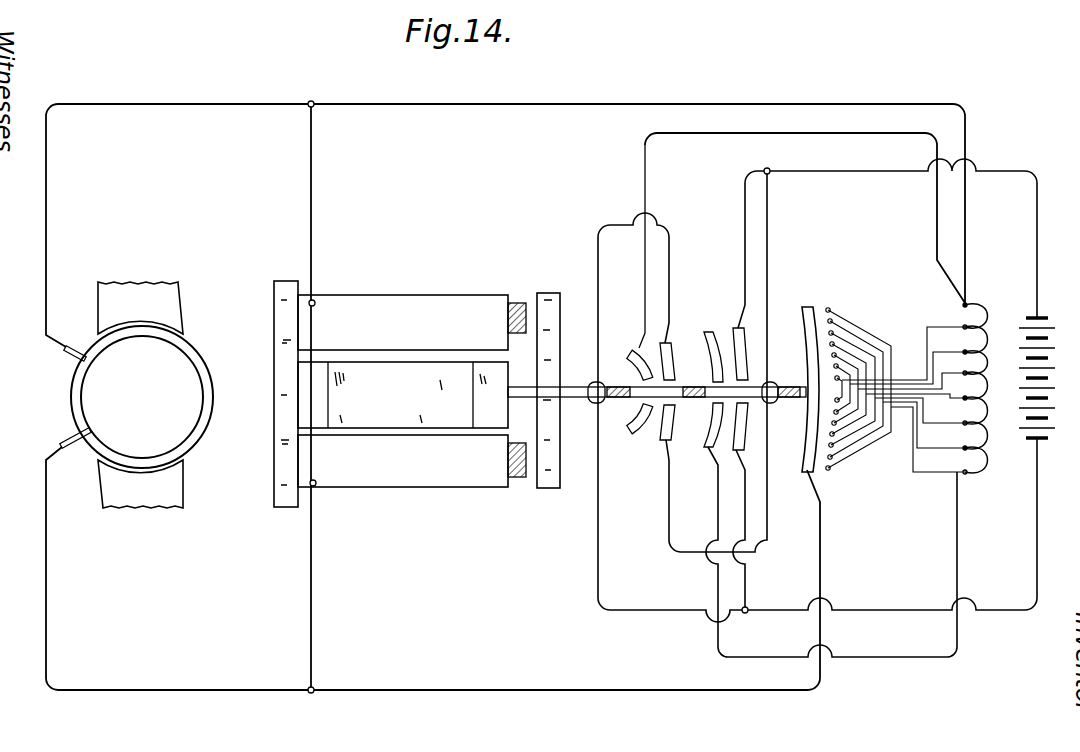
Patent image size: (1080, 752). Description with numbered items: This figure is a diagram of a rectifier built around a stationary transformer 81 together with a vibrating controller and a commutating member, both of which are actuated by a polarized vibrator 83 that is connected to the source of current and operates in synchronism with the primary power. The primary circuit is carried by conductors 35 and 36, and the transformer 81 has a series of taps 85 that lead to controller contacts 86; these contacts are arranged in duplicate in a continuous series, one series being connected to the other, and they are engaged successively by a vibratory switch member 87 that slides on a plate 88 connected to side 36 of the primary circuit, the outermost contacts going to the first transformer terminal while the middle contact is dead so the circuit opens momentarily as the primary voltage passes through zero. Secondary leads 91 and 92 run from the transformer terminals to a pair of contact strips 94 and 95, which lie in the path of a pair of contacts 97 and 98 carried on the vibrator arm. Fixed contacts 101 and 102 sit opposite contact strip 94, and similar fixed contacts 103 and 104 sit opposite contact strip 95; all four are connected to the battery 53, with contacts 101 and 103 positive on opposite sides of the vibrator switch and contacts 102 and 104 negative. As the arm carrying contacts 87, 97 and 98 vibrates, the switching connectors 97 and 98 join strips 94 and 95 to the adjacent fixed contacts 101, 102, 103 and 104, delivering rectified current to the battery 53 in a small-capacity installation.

The primary circuit side 35 is at (47, 215).
The side of the primary circuit 36 is at (47, 598).
The battery 53 is at (1045, 379).
The stationary transformer 81 is at (980, 393).
The vibrator 83 is at (417, 397).
The taps 85 is at (962, 450).
The controller contacts 86 is at (832, 459).
The vibratory switch member 87 is at (807, 386).
The plate 88 is at (804, 330).
The secondary lead 91 is at (805, 210).
The secondary lead 92 is at (885, 647).
The contact strip 94 is at (630, 289).
The contact strip 95 is at (708, 438).
The vibrator contact 97 is at (672, 393).
The vibrator contact 98 is at (706, 399).
The fixed contact 101 is at (674, 362).
The fixed contact 102 is at (662, 428).
The fixed contact 103 is at (747, 428).
The fixed contact 104 is at (746, 350).